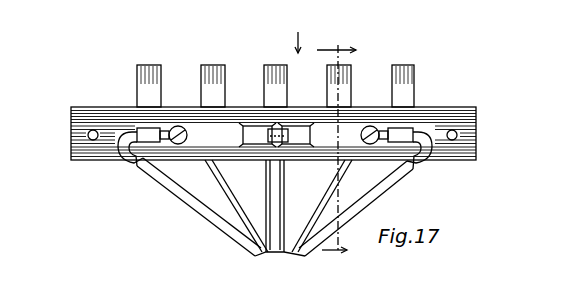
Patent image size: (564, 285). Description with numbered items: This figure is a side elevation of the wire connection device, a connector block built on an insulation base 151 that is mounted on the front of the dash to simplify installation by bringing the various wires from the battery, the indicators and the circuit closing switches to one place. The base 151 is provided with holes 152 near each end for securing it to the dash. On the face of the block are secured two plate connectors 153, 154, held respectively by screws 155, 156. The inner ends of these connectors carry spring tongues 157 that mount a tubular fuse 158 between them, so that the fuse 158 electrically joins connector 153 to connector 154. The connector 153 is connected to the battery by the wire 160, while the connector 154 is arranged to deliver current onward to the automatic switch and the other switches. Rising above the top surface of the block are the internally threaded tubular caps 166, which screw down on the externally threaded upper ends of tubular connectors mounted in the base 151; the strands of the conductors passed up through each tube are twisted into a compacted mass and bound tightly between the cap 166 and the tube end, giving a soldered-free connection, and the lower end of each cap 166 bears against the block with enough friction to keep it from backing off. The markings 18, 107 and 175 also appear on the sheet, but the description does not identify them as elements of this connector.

The insulation base 151 is at (92, 150).
The holes 152 is at (87, 134).
The plate connector 153 is at (397, 150).
The plate connector 154 is at (199, 145).
The screw 155 is at (376, 130).
The screw 156 is at (174, 128).
The spring tongues 157 is at (256, 126).
The tubular fuse 158 is at (278, 132).
The wire 160 is at (377, 183).
The tubular cap 166 is at (147, 72).
The section line 18 is at (336, 153).
The assembly 107 is at (312, 20).
The element 175 is at (251, 3).